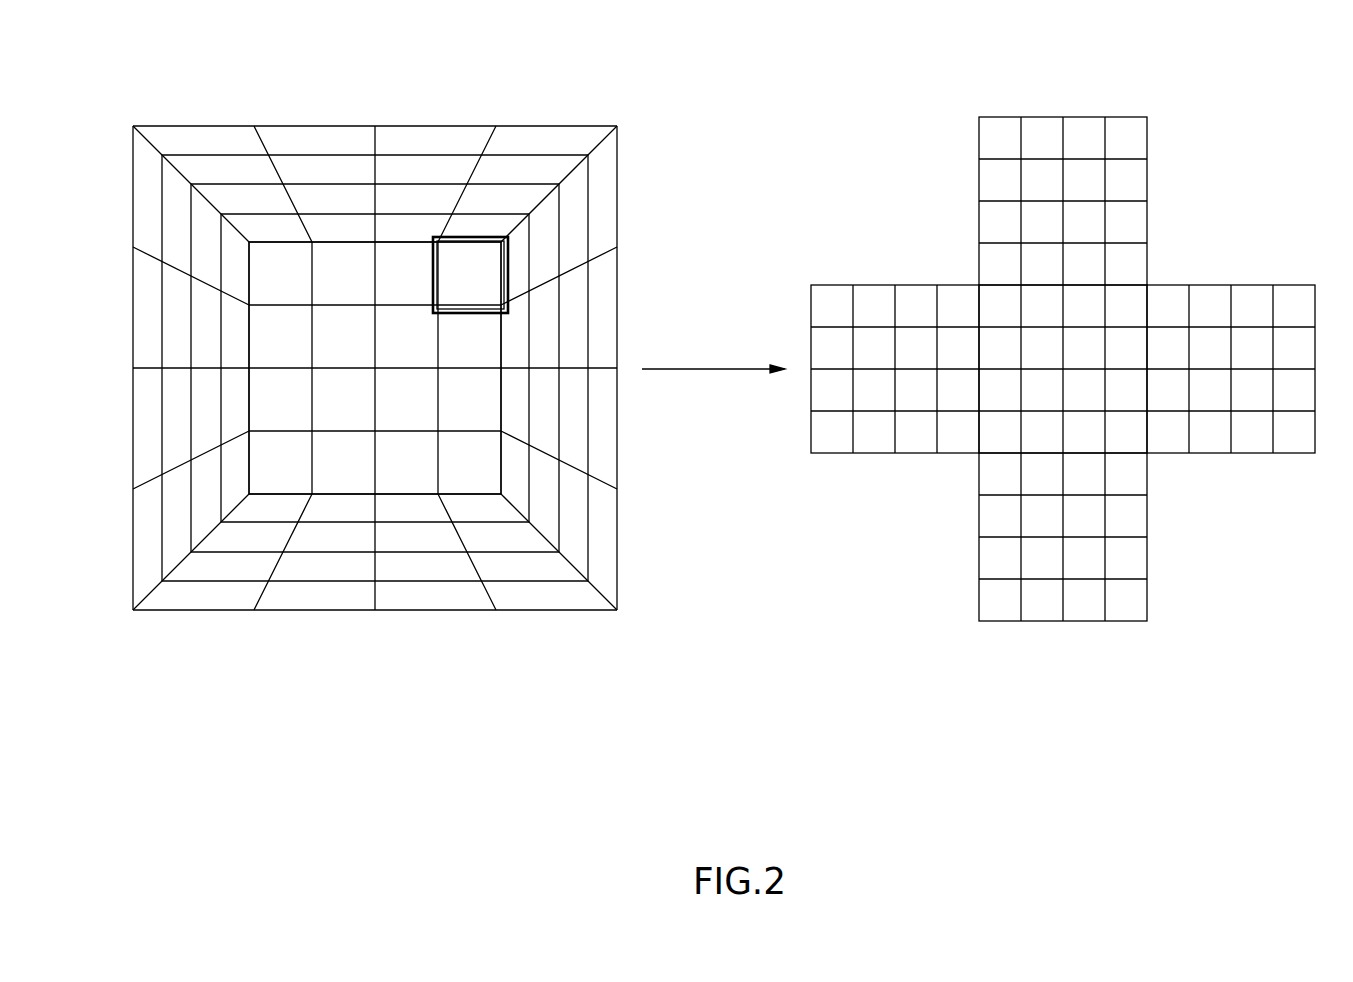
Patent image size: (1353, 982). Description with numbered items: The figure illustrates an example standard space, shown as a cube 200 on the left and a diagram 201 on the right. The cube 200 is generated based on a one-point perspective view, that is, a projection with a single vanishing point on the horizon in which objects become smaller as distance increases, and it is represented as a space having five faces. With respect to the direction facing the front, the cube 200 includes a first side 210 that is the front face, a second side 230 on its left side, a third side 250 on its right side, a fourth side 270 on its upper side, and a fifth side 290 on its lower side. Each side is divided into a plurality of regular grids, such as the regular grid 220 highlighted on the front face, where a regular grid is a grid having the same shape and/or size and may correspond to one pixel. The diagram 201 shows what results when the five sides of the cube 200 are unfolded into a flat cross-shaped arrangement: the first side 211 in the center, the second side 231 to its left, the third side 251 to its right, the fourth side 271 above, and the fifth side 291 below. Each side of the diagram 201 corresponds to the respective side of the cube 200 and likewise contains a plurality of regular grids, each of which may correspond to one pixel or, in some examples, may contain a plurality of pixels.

The cube 200 is at (399, 64).
The diagram 201 is at (1087, 55).
The first side 210 is at (375, 368).
The regular grid 220 is at (470, 235).
The second side 230 is at (192, 368).
The third side 250 is at (559, 368).
The fourth side 270 is at (375, 184).
The fifth side 290 is at (375, 552).
The first side 211 is at (1063, 369).
The second side 231 is at (895, 369).
The third side 251 is at (1231, 369).
The fourth side 271 is at (1063, 201).
The fifth side 291 is at (1063, 537).